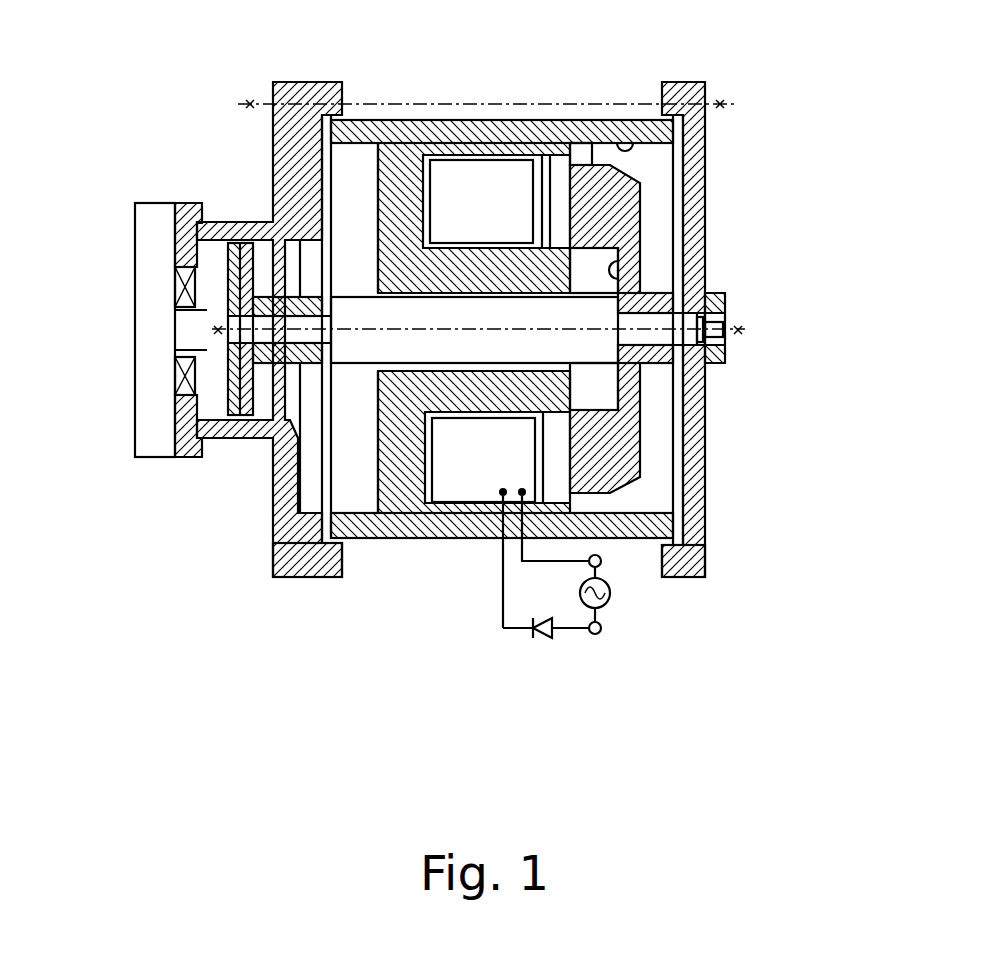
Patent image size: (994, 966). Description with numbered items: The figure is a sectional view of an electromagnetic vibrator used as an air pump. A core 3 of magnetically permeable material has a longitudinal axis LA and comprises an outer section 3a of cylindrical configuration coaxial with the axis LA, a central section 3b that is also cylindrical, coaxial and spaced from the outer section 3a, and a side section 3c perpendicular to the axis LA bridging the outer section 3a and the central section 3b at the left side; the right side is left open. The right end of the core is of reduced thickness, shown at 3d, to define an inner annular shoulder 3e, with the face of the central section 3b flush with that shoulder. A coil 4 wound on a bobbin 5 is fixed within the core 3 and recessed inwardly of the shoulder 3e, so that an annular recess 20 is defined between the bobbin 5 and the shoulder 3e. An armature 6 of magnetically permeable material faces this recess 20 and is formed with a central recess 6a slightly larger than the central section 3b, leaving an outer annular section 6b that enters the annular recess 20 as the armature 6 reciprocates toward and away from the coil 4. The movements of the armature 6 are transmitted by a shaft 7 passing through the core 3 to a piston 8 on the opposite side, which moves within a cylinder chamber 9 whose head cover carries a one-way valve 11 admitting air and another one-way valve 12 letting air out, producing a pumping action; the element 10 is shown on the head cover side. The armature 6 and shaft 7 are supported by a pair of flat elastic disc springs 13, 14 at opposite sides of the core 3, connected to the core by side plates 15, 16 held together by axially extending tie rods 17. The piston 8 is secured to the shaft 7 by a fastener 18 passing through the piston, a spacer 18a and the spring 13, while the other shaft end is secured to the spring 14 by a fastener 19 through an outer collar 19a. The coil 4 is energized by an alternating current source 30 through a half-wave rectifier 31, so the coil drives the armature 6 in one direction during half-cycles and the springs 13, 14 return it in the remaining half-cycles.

The core 3 is at (413, 122).
The outer section 3a is at (480, 132).
The central section 3b is at (458, 257).
The side section 3c is at (272, 527).
The reduced thickness end 3d is at (633, 121).
The inner annular shoulder 3e is at (590, 130).
The coil 4 is at (467, 480).
The bobbin 5 is at (425, 477).
The armature 6 is at (643, 182).
The central recess 6a is at (620, 253).
The outer annular section 6b is at (600, 212).
The shaft 7 is at (592, 350).
The piston 8 is at (235, 397).
The cylinder chamber 9 is at (207, 312).
The drive member 10 is at (155, 345).
The one-way valve 11 is at (177, 285).
The one-way valve 12 is at (177, 397).
The flat elastic spring 13 is at (327, 223).
The flat elastic spring 14 is at (677, 200).
The side plate 15 is at (280, 557).
The side plate 16 is at (693, 573).
The tie rods 17 is at (728, 100).
The fastener 18 is at (214, 330).
The spacer 18a is at (283, 363).
The fastener 19 is at (743, 332).
The outer collar 19a is at (717, 300).
The annular recess 20 is at (546, 182).
The source of alternating current 30 is at (607, 605).
The half-wave rectifier 31 is at (542, 637).
The longitudinal axis LA is at (420, 328).